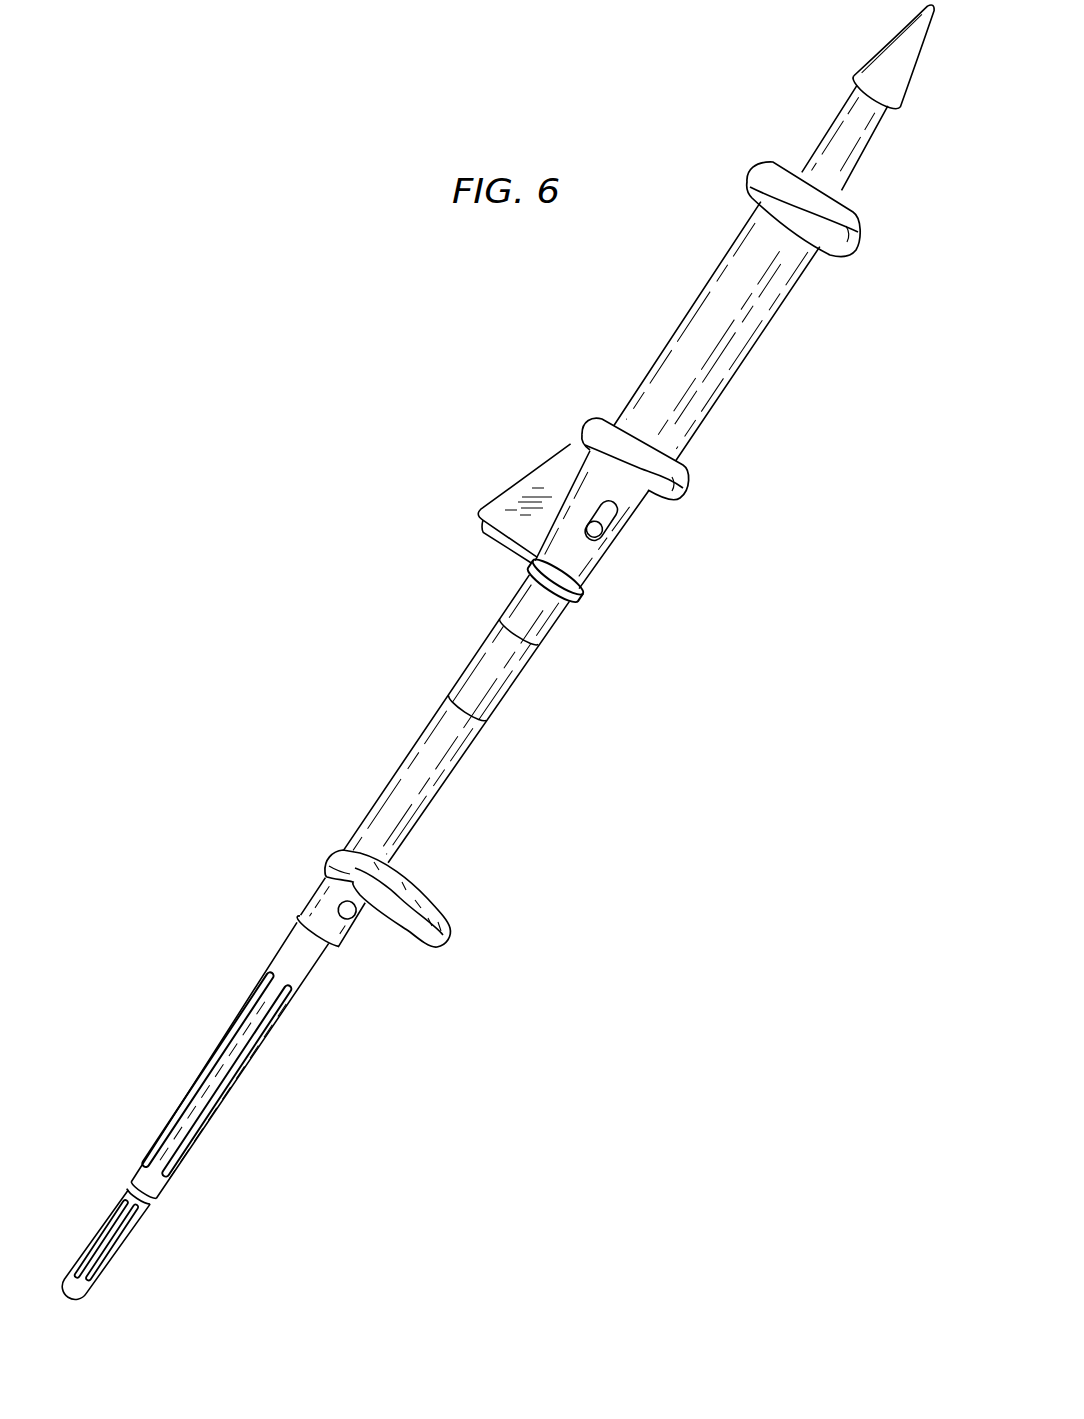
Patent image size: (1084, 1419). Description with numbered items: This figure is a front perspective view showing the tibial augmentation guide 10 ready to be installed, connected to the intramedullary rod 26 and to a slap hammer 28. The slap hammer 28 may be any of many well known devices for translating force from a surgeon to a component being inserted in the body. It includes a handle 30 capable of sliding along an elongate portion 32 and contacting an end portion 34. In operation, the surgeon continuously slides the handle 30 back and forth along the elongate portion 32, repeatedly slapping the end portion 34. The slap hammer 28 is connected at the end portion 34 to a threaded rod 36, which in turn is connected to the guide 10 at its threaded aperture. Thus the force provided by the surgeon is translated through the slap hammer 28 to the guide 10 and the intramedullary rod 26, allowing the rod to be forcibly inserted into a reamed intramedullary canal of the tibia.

The guide 10 is at (457, 953).
The intramedullary rod 26 is at (203, 1103).
The slap hammer 28 is at (778, 336).
The handle 30 is at (718, 300).
The elongate portion 32 is at (851, 138).
The end portion 34 is at (572, 561).
The threaded rod 36 is at (500, 665).